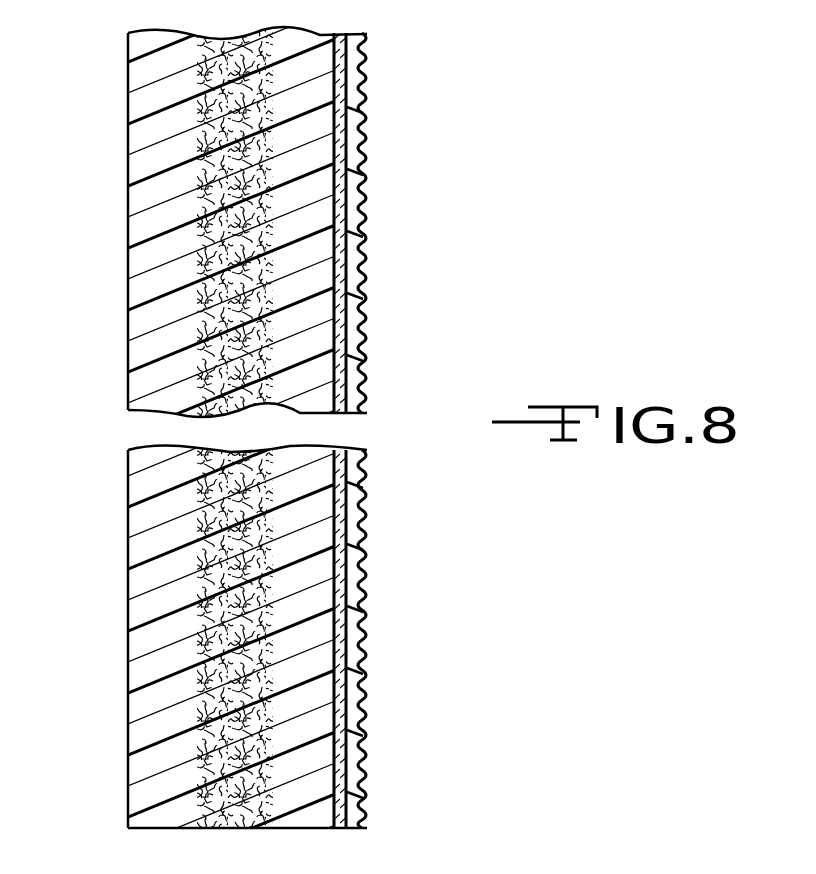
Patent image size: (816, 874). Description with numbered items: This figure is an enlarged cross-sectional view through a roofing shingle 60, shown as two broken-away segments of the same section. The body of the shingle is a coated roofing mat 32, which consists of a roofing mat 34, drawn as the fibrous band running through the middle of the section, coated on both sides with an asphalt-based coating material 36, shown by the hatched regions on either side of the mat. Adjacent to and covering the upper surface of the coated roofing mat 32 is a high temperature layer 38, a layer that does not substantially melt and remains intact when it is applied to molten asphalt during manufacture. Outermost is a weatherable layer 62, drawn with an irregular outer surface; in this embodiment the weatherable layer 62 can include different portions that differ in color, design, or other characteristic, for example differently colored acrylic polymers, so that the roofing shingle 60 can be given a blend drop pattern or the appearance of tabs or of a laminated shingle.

The roofing shingle 60 is at (72, 127).
The coated roofing mat 32 is at (342, 210).
The roofing mat 34 is at (216, 231).
The asphalt-based coating material 36 is at (147, 291).
The high temperature layer 38 is at (360, 278).
The weatherable layer 62 is at (365, 377).